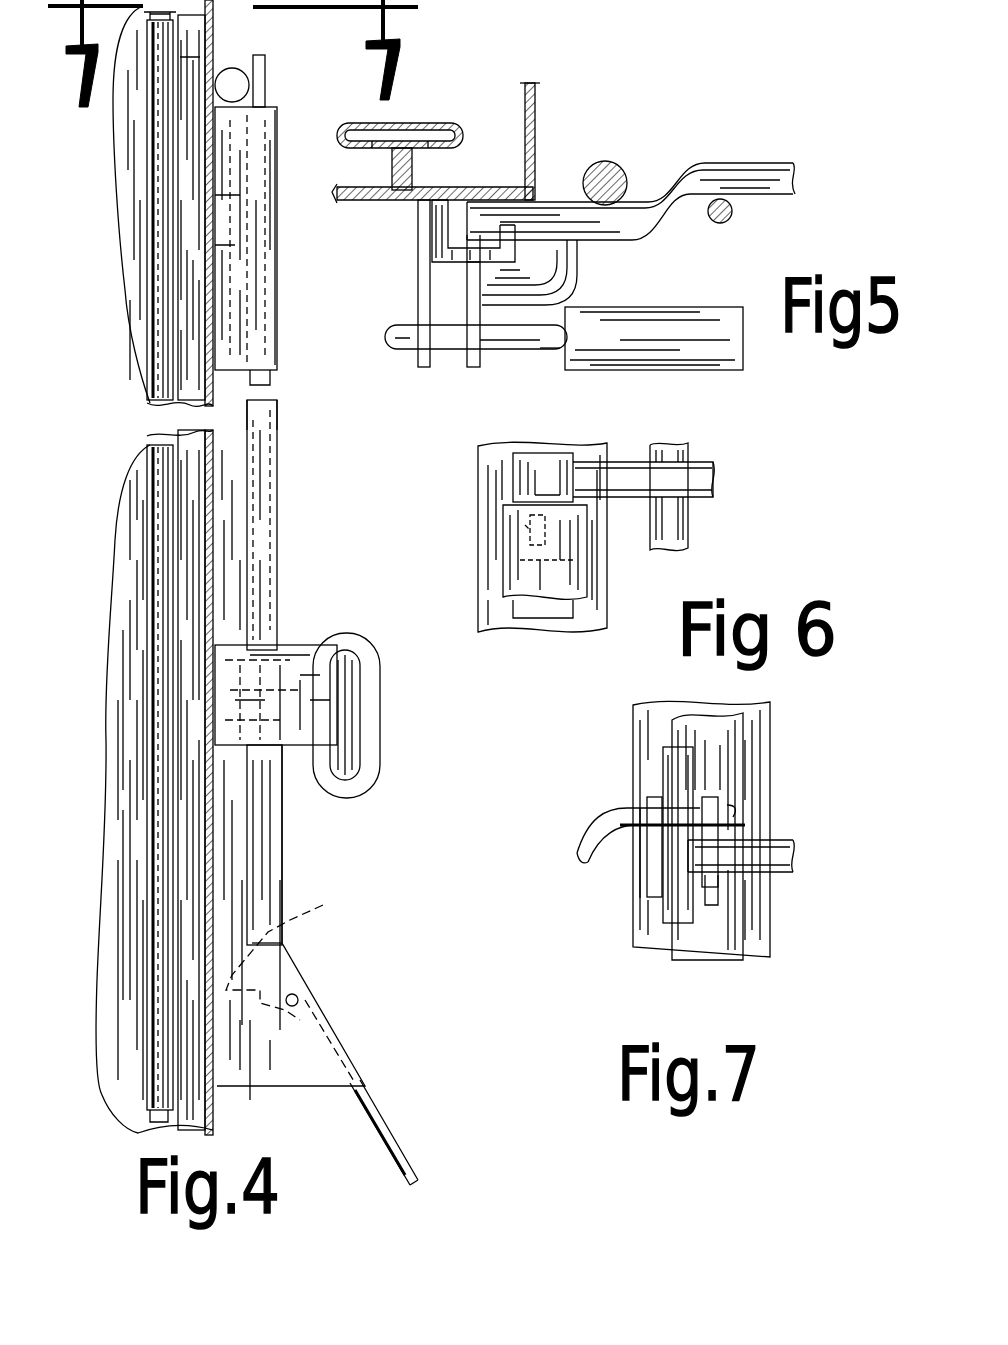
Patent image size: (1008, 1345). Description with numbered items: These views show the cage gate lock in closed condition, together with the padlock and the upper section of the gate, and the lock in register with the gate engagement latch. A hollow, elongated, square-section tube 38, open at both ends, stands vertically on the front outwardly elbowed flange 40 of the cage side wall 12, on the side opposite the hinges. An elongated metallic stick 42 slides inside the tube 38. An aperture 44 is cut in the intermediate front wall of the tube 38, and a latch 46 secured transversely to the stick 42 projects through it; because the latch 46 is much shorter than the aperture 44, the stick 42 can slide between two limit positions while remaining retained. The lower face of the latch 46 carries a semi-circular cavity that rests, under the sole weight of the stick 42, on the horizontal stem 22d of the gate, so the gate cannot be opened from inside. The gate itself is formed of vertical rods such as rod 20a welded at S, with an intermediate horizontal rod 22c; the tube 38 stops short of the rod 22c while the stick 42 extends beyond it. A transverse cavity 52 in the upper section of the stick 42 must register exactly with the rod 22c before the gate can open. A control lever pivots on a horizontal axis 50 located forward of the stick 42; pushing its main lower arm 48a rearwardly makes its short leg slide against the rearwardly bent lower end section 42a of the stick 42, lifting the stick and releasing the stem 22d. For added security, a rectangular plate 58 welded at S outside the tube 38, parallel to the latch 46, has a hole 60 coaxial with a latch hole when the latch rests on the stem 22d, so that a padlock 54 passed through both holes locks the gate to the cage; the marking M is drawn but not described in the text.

In FIG. 4, the cage side wall 12 is at (118, 575).
In FIG. 5, the vertical rod of the quadrangular gate assembly 20a is at (603, 166).
In FIG. 6, the vertical rod of the quadrangular gate assembly 20a is at (700, 516).
In FIG. 4, the intermediate horizontal rod 22c is at (230, 80).
In FIG. 5, the intermediate horizontal rod 22c is at (755, 175).
In FIG. 6, the intermediate horizontal rod 22c is at (680, 477).
In FIG. 5, the horizontal stem 22d is at (555, 272).
In FIG. 7, the horizontal stem 22d is at (783, 842).
In FIG. 4, the hollow square tube 38 is at (258, 490).
In FIG. 5, the hollow square tube 38 is at (420, 265).
In FIG. 6, the hollow square tube 38 is at (522, 548).
In FIG. 7, the hollow square tube 38 is at (733, 917).
In FIG. 4, the front outwardly elbowed flange 40 is at (215, 440).
In FIG. 6, the front outwardly elbowed flange 40 is at (480, 452).
In FIG. 7, the front outwardly elbowed flange 40 is at (637, 755).
In FIG. 4, the stick 42 is at (268, 77).
In FIG. 5, the stick 42 is at (430, 240).
In FIG. 6, the stick 42 is at (515, 612).
In FIG. 7, the stick 42 is at (708, 785).
In FIG. 4, the lower end section of the stick 42a is at (298, 984).
In FIG. 7, the aperture 44 is at (710, 898).
In FIG. 5, the latch 46 is at (470, 362).
In FIG. 7, the latch 46 is at (720, 800).
In FIG. 4, the main lower arm of the control lever 48a is at (385, 1140).
In FIG. 4, the pivotal axis 50 is at (300, 995).
In FIG. 6, the transverse cavity 52 is at (470, 515).
In FIG. 4, the padlock 54 is at (410, 712).
In FIG. 5, the padlock 54 is at (700, 300).
In FIG. 7, the padlock 54 is at (580, 820).
In FIG. 4, the rectangular plate 58 is at (237, 668).
In FIG. 7, the rectangular plate 58 is at (640, 870).
In FIG. 4, the hole in the plate 60 is at (352, 650).
In FIG. 5, the weld S is at (632, 205).
In FIG. 5, the mark M is at (548, 352).